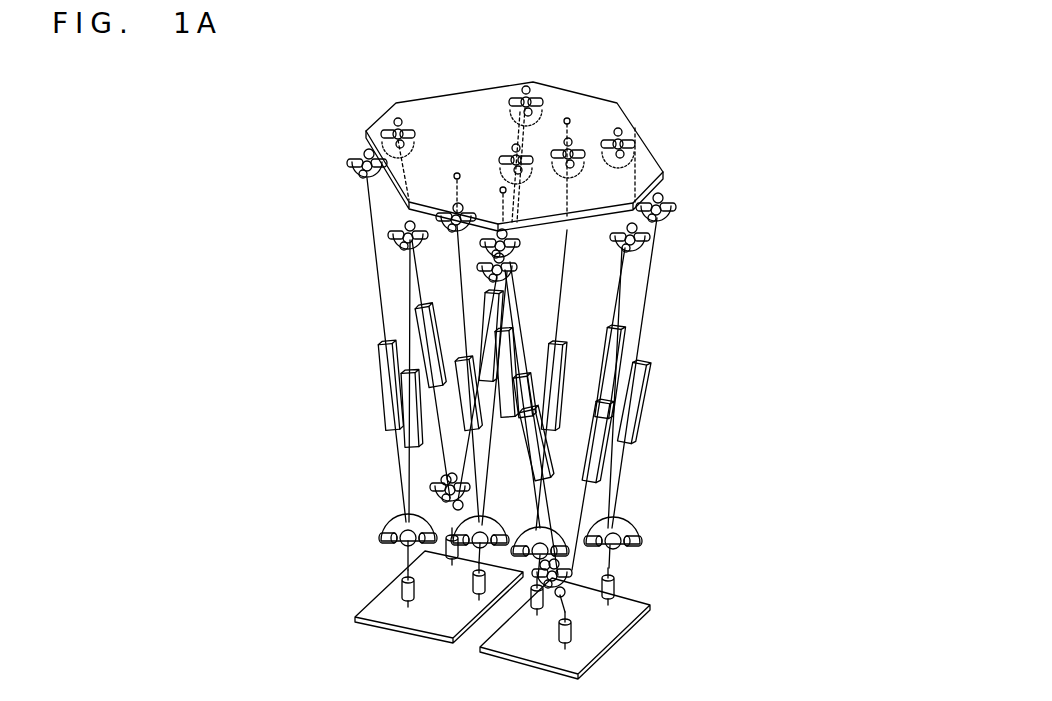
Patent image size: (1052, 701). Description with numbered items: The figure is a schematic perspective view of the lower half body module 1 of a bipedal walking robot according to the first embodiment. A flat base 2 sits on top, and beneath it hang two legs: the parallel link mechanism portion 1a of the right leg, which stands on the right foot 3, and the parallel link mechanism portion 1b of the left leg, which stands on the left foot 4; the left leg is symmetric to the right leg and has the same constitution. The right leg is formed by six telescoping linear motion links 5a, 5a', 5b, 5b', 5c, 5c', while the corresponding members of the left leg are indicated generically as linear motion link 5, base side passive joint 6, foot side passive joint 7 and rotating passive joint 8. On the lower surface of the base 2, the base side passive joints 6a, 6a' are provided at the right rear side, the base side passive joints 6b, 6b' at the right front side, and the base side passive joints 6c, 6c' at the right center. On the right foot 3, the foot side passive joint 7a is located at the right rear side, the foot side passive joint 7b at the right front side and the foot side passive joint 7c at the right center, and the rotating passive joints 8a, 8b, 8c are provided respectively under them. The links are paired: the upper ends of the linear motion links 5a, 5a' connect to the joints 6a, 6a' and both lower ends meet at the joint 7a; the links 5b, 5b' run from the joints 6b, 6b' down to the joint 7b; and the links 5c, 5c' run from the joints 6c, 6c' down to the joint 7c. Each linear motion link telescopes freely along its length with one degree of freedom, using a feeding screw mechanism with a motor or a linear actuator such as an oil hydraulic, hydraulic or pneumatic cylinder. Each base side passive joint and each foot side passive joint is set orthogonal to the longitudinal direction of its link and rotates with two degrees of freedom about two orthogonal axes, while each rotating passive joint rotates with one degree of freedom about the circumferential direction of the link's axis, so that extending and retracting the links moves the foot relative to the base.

The lower half body module 1 is at (366, 90).
The parallel link mechanism portion of right leg 1a is at (322, 415).
The parallel link mechanism portion of left leg 1b is at (663, 365).
The base 2 is at (636, 175).
The right foot 3 is at (397, 605).
The left foot 4 is at (617, 621).
The linear motion link 5 is at (643, 411).
The linear motion link 5a is at (399, 382).
The linear motion link 5a' is at (365, 369).
The linear motion link 5b is at (354, 350).
The linear motion link 5b' is at (371, 381).
The linear motion link 5c is at (392, 398).
The linear motion link 5c' is at (384, 373).
The base side passive joint 6 is at (670, 210).
The base side passive joint 6a is at (538, 78).
The base side passive joint 6a' is at (420, 96).
The base side passive joint 6b is at (339, 152).
The base side passive joint 6b' is at (365, 235).
The base side passive joint 6c is at (550, 166).
The base side passive joint 6c' is at (387, 203).
The foot side passive joint 7 is at (637, 540).
The foot side passive joint 7a is at (432, 497).
The foot side passive joint 7b is at (403, 533).
The foot side passive joint 7c is at (477, 546).
The rotating passive joint 8 is at (614, 590).
The rotating passive joint 8a is at (443, 548).
The rotating passive joint 8b is at (407, 600).
The rotating passive joint 8c is at (482, 594).